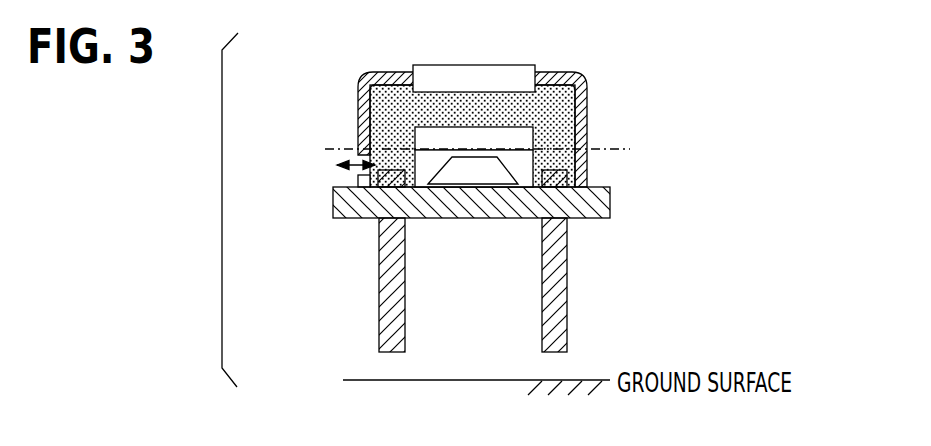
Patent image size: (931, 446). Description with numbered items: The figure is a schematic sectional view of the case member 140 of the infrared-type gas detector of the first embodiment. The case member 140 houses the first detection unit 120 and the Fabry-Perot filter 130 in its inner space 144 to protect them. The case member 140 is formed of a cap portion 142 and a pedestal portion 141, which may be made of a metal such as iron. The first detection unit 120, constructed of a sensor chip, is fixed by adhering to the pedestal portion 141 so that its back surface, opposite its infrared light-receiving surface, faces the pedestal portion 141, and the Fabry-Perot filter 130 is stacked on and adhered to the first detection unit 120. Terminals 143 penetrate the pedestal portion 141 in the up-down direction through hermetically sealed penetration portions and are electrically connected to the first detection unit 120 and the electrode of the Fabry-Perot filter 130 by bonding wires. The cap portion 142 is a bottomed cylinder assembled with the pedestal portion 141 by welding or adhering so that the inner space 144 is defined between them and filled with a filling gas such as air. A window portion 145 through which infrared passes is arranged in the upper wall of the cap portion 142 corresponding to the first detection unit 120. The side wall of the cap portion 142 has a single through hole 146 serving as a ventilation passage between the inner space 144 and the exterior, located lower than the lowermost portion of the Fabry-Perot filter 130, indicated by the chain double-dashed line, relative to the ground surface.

The case member 140 is at (477, 104).
The pedestal portion 141 is at (600, 202).
The cap portion 142 is at (582, 138).
The terminal 143 is at (563, 260).
The inner space 144 is at (388, 110).
The window portion 145 is at (485, 73).
The through hole 146 is at (357, 160).
The first detection unit 120 is at (520, 133).
The Fabry-Perot filter 130 is at (523, 168).